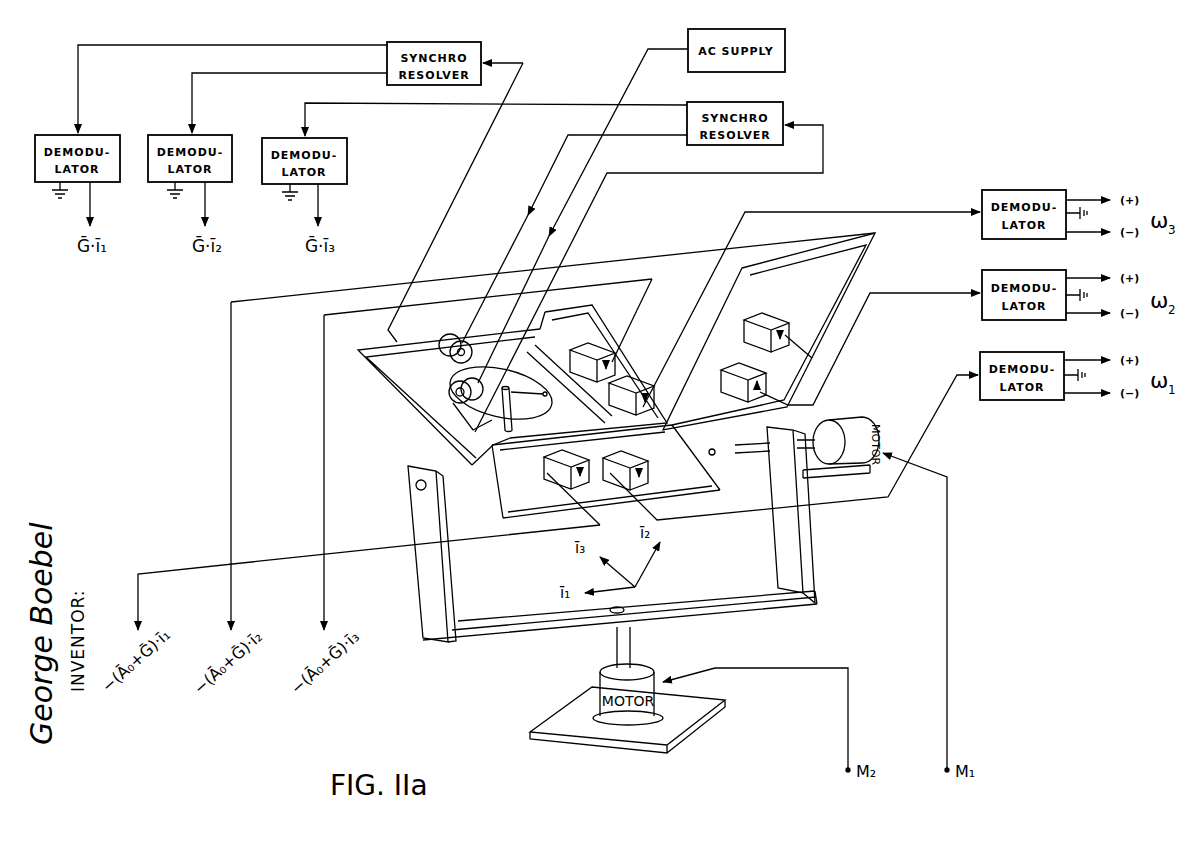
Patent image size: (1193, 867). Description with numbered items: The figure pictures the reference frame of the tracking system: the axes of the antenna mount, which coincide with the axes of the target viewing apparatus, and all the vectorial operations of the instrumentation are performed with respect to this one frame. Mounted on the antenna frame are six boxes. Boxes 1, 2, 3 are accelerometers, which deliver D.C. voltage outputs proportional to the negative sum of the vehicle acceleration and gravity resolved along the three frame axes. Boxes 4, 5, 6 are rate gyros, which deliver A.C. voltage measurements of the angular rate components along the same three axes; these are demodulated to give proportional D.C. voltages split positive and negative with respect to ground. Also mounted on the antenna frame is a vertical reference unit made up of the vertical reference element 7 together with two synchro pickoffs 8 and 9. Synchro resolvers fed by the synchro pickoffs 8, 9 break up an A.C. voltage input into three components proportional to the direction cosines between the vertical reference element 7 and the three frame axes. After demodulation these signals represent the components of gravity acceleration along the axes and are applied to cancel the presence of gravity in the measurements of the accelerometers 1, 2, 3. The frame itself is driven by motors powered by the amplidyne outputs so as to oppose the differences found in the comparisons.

The accelerometer 1 is at (572, 487).
The accelerometer 2 is at (778, 335).
The accelerometer 3 is at (611, 330).
The rate gyro 4 is at (790, 447).
The rate gyro 5 is at (850, 349).
The rate gyro 6 is at (794, 313).
The vertical reference element 7 is at (501, 395).
The synchro pickoff 8 is at (462, 404).
The synchro pickoff 9 is at (455, 339).